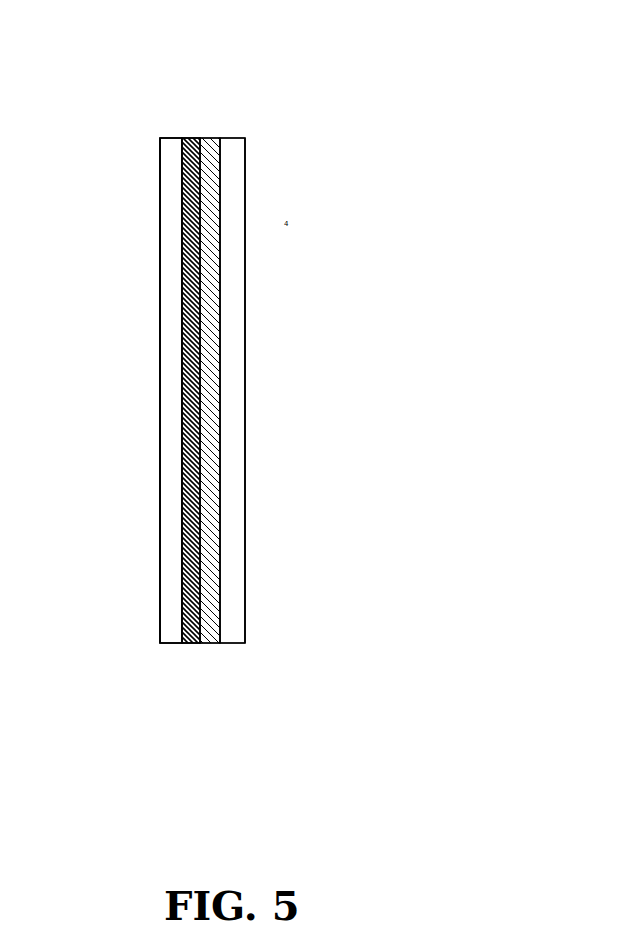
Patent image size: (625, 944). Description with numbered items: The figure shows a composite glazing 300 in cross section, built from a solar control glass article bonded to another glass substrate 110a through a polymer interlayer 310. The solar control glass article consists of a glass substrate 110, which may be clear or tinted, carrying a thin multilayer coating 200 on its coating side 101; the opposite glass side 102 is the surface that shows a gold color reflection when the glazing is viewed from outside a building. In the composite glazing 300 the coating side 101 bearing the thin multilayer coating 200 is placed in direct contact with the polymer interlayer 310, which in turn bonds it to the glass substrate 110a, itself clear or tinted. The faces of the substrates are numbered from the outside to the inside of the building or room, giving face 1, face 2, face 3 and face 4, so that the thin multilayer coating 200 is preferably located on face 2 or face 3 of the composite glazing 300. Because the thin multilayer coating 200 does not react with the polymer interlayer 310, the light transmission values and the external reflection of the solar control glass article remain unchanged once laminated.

The composite glazing 300 is at (229, 109).
The thin multilayer coating 200 is at (195, 137).
The coating side 101 is at (183, 260).
The glass side 102 is at (158, 373).
The glass substrate 110 is at (170, 630).
The glass substrate 110a is at (232, 612).
The polymer interlayer 310 is at (210, 630).
The face 1 is at (160, 150).
The face 2 is at (182, 199).
The face 3 is at (220, 199).
The face 4 is at (245, 150).